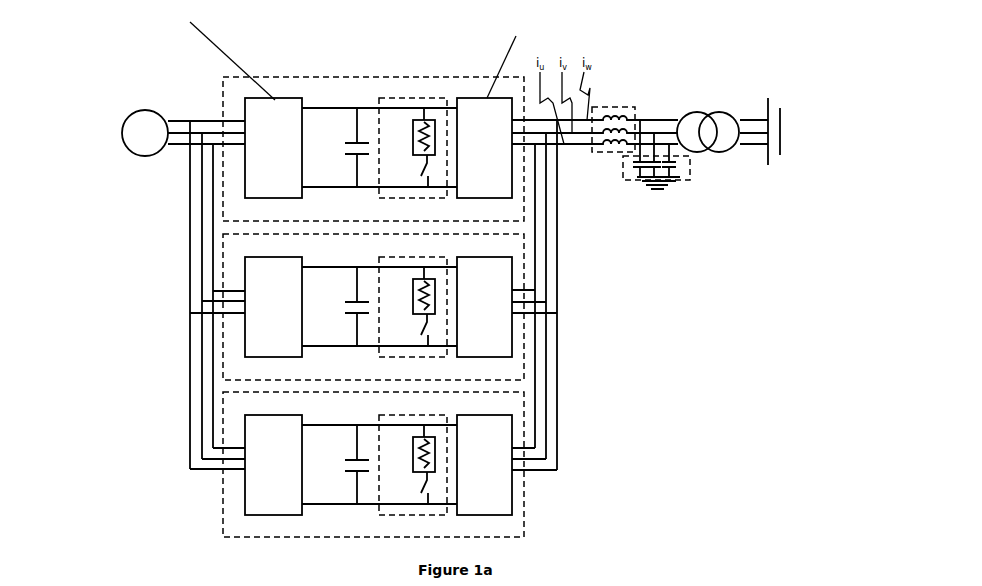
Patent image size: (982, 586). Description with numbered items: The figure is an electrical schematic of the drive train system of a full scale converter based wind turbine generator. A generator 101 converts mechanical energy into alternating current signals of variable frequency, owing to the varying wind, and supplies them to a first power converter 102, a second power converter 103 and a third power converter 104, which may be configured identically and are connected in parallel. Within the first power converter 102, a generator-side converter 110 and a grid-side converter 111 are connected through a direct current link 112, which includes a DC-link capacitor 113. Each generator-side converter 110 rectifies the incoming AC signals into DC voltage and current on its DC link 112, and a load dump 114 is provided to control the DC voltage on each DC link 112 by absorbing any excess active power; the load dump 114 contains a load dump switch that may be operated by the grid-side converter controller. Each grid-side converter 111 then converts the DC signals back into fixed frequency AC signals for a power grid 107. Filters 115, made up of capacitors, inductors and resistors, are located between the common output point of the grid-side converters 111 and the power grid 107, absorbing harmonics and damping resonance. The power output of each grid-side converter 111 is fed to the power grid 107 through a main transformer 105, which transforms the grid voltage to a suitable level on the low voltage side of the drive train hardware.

The generator 101 is at (121, 148).
The first power converter 102 is at (330, 75).
The second power converter 103 is at (523, 283).
The third power converter 104 is at (523, 432).
The main transformer 105 is at (703, 112).
The power grid 107 is at (786, 120).
The generator-side converter 110 is at (290, 120).
The grid-side converter 111 is at (503, 122).
The DC link 112 is at (350, 108).
The DC-link capacitor 113 is at (333, 132).
The load dump 114 is at (388, 97).
The filters 115 is at (634, 110).